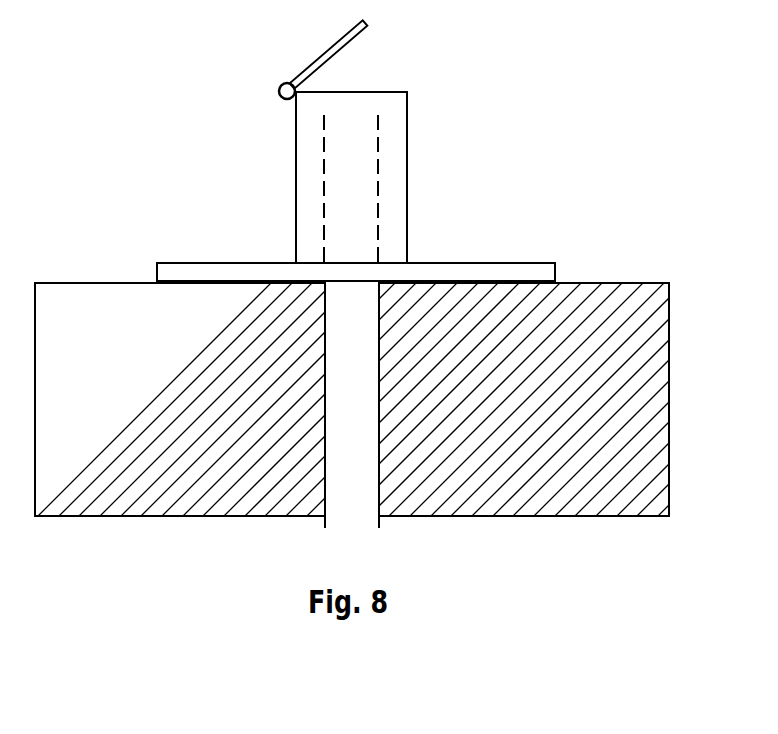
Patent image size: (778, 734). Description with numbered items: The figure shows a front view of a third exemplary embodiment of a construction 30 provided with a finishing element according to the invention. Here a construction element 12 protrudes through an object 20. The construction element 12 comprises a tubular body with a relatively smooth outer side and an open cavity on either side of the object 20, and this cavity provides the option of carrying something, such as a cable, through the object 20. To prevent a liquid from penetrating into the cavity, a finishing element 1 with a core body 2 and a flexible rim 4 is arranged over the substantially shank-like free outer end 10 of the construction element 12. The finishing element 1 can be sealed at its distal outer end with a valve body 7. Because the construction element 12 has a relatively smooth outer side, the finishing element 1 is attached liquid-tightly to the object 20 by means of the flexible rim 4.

The finishing element 1 is at (339, 137).
The core body 2 is at (339, 177).
The flexible rim 4 is at (517, 270).
The valve body 7 is at (325, 57).
The free outer end 10 is at (337, 192).
The construction element 12 is at (355, 447).
The object 20 is at (672, 332).
The construction 30 is at (349, 146).